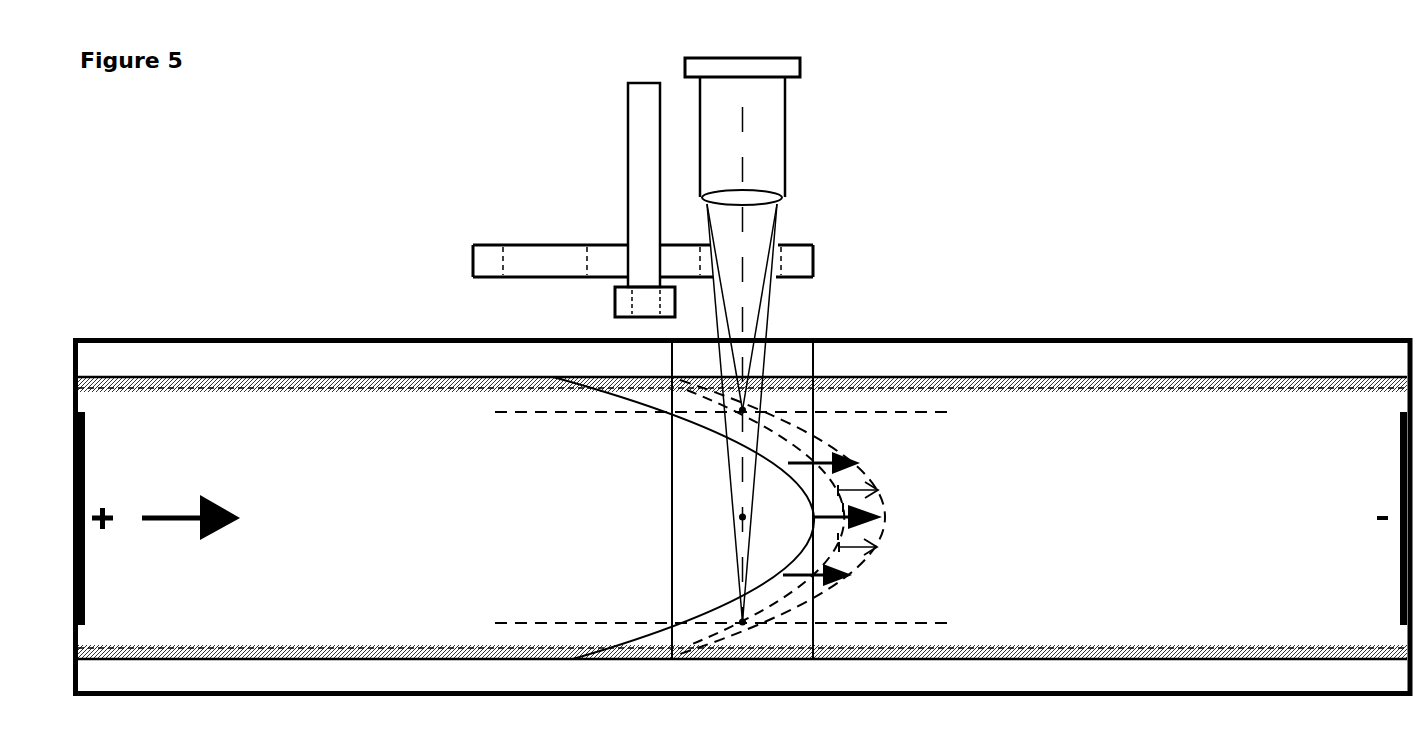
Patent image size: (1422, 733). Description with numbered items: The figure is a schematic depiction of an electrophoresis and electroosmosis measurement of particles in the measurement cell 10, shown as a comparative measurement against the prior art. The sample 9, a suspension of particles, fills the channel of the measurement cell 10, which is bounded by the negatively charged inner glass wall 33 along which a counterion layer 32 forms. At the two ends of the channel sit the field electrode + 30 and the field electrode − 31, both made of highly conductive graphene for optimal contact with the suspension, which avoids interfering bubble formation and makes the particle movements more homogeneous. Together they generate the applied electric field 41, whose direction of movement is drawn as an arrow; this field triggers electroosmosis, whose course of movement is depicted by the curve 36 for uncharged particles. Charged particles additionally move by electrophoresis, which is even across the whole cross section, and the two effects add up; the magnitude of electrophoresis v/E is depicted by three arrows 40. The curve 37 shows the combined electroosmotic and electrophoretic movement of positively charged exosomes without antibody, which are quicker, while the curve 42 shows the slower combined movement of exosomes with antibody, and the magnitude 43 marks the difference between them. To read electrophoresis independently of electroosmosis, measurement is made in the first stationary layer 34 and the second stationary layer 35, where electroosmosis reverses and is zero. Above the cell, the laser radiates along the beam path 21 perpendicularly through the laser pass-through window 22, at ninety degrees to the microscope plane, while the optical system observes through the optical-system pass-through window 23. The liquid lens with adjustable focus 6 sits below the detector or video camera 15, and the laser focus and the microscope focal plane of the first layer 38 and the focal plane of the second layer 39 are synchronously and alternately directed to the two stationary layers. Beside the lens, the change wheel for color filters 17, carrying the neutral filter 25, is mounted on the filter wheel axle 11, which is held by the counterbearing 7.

The liquid lens with adjustable focus 6 is at (768, 197).
The counterbearing of the filter wheel axle 7 is at (647, 298).
The sample 9 is at (313, 447).
The measurement cell 10 is at (405, 363).
The filter wheel axle 11 is at (645, 162).
The detector or video camera 15 is at (795, 76).
The change wheel for color filters 17 is at (548, 260).
The beam path for laser 21 is at (742, 517).
The laser pass-through window of the measurement cell 22 is at (672, 475).
The optical-system pass-through window of the measurement cell 23 is at (815, 337).
The neutral filter 25 is at (780, 260).
The field electrode + 30 is at (85, 482).
The field electrode − 31 is at (1400, 483).
The counterion layer 32 is at (433, 385).
The inner glass wall of measurement cell 33 is at (383, 380).
The stationary layer 1 34 is at (940, 623).
The stationary layer 2 35 is at (935, 412).
The curve of purely electroosmotic movement 36 is at (855, 560).
The curve of electroosmotic and electrophoretic movement 37 is at (882, 532).
The focal plane of layer 1 38 is at (735, 550).
The focal plane of layer 2 39 is at (762, 303).
The magnitude of electrophoresis v/E 40 is at (853, 456).
The electric field 41 is at (198, 525).
The curve of electroosmotic and electrophoretic movement, exosomes with antibody 42 is at (843, 507).
The magnitude between exosomes with and without antibody 43 is at (878, 492).